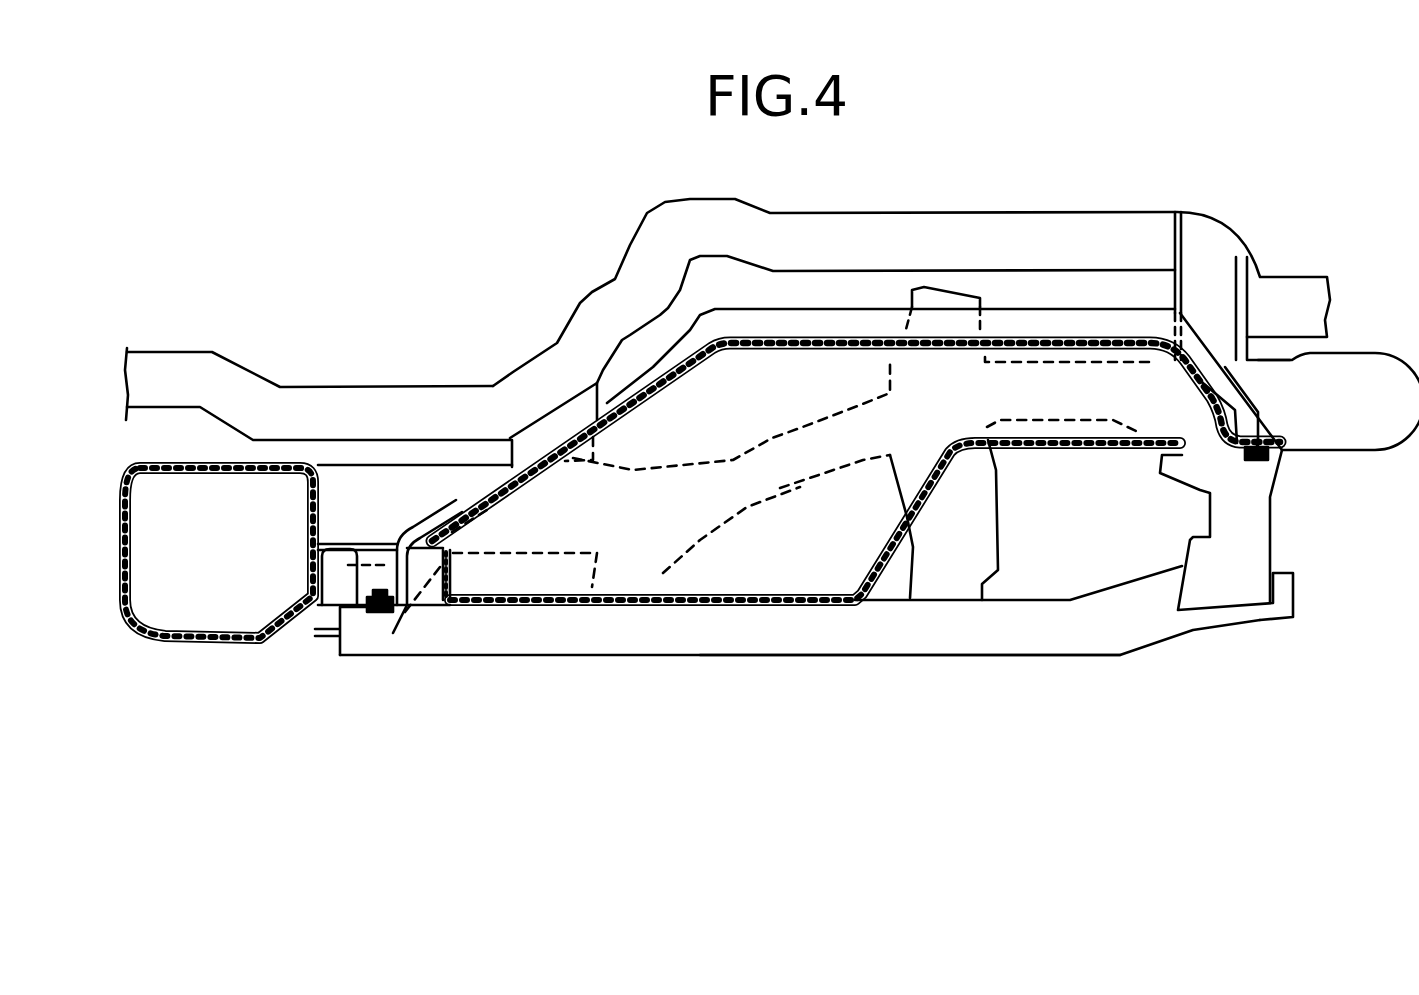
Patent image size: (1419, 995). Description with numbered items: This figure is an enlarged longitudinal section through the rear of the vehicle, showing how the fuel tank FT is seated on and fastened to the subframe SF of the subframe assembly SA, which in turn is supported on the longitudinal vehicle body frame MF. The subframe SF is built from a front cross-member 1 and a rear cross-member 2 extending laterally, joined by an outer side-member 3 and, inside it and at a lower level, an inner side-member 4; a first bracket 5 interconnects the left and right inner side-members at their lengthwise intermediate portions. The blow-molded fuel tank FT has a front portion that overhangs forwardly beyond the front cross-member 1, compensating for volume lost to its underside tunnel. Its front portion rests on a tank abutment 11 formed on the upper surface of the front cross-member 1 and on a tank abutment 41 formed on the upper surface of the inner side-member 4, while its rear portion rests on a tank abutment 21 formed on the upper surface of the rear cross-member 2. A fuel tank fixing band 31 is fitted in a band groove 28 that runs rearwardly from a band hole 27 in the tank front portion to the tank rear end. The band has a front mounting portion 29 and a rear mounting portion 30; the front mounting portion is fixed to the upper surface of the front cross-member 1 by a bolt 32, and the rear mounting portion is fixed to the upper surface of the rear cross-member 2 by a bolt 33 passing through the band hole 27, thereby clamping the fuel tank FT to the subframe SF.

The front cross-member 1 is at (343, 655).
The tank abutment 11 is at (357, 577).
The rear cross-member 2 is at (1277, 531).
The tank abutment 21 is at (1180, 437).
The outer side-member 3 is at (772, 440).
The inner side-member 4 is at (643, 662).
The tank abutment 41 is at (640, 592).
The first bracket 5 is at (1000, 530).
The band hole 27 is at (367, 544).
The band groove 28 is at (838, 327).
The front mounting portion 29 is at (407, 540).
The rear mounting portion 30 is at (1255, 405).
The fuel tank fixing band 31 is at (1062, 340).
The bolt 32 is at (386, 617).
The bolt 33 is at (1257, 460).
The subframe assembly SA is at (470, 336).
The vehicle body frame MF is at (785, 209).
The fuel tank FT is at (235, 645).
The subframe SF is at (883, 661).